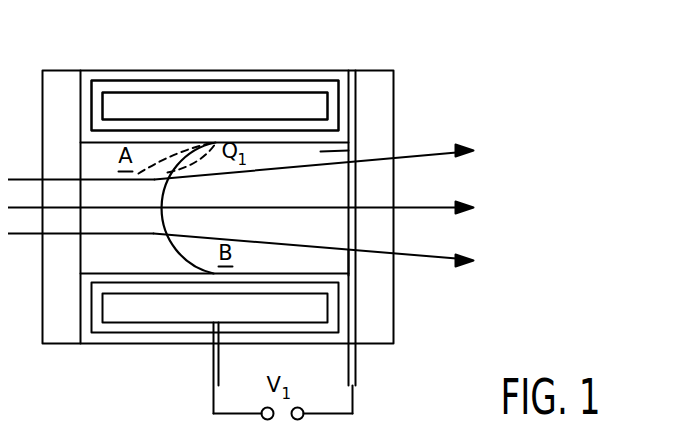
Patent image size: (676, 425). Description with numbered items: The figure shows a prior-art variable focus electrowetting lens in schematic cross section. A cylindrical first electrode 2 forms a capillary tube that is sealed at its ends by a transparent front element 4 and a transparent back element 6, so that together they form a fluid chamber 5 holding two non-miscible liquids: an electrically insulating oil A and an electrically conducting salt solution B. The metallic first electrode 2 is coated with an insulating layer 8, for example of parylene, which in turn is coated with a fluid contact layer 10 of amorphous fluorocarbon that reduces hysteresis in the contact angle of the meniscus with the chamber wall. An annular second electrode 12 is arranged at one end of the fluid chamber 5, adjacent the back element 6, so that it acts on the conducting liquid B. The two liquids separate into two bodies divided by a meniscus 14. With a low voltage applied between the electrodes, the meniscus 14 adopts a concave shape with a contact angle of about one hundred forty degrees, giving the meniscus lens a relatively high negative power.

The first electrode 2 is at (280, 100).
The transparent front element 4 is at (60, 90).
The fluid chamber 5 is at (348, 150).
The transparent back element 6 is at (373, 90).
The insulating layer 8 is at (137, 120).
The fluid contact layer 10 is at (187, 135).
The second electrode 12 is at (355, 262).
The meniscus 14 is at (172, 250).